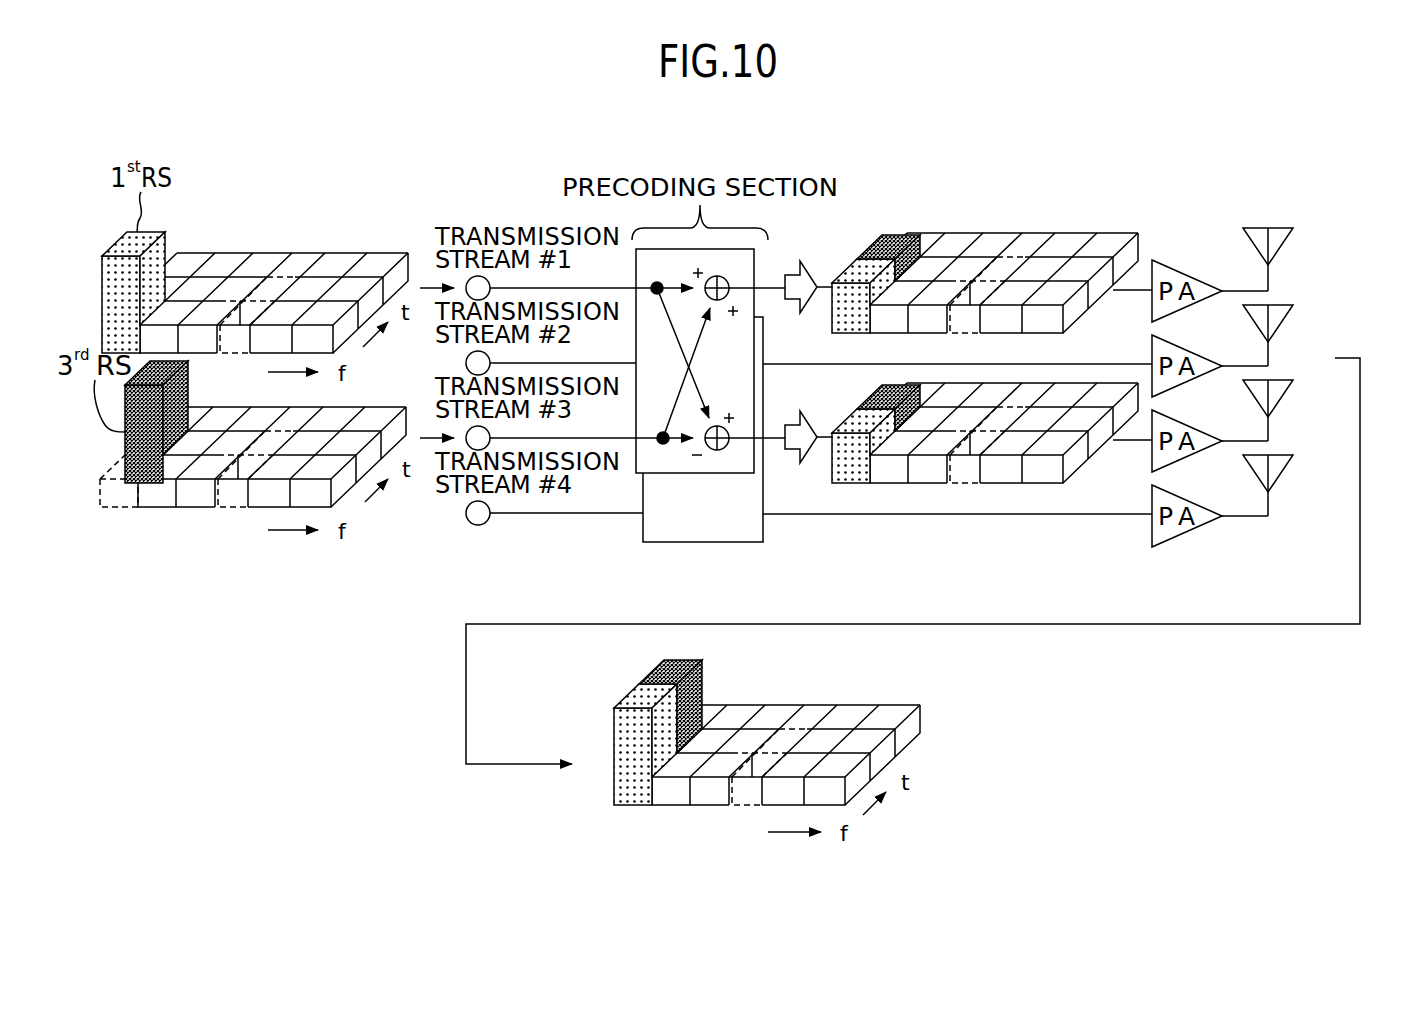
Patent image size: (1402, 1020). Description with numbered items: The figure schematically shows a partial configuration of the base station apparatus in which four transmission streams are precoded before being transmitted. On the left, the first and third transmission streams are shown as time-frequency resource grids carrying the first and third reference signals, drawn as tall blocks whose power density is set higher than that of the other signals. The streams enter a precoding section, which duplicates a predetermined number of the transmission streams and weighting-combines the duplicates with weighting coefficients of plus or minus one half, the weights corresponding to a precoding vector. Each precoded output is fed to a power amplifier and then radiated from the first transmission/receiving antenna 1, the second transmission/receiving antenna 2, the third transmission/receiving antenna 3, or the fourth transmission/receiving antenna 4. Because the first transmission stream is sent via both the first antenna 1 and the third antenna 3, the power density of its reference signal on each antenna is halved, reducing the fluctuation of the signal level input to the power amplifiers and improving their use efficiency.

The first transmission/receiving antenna 1 is at (1291, 238).
The second transmission/receiving antenna 2 is at (1291, 315).
The third transmission/receiving antenna 3 is at (1291, 390).
The fourth transmission/receiving antenna 4 is at (1291, 465).